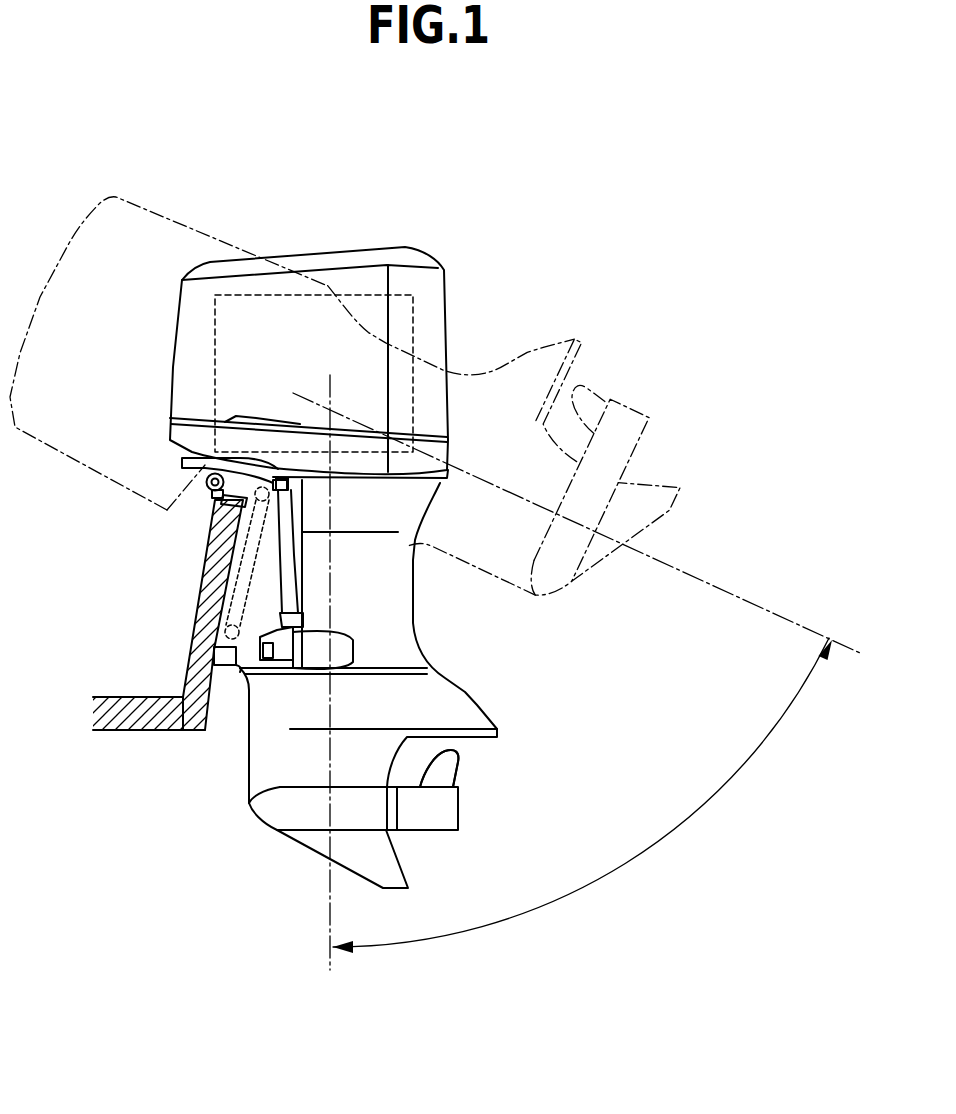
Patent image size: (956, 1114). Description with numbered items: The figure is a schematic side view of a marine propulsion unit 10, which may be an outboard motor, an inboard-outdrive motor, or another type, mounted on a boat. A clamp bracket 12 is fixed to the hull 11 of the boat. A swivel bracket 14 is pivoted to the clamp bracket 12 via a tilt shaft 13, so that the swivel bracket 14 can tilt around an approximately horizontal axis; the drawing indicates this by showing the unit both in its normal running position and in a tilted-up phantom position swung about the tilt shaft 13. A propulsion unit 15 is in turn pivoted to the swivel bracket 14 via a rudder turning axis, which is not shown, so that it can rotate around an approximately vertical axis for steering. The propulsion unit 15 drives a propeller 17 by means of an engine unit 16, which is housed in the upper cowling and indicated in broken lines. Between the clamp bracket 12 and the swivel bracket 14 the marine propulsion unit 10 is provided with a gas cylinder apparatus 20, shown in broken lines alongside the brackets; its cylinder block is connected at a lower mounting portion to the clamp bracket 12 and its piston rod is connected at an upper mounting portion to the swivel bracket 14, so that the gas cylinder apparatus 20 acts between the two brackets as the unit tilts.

The marine propulsion unit 10 is at (488, 300).
The hull 11 is at (125, 697).
The clamp bracket 12 is at (237, 667).
The tilt shaft 13 is at (206, 476).
The swivel bracket 14 is at (277, 580).
The propulsion unit 15 is at (417, 578).
The engine unit 16 is at (413, 337).
The propeller 17 is at (460, 770).
The gas cylinder apparatus 20 is at (193, 602).